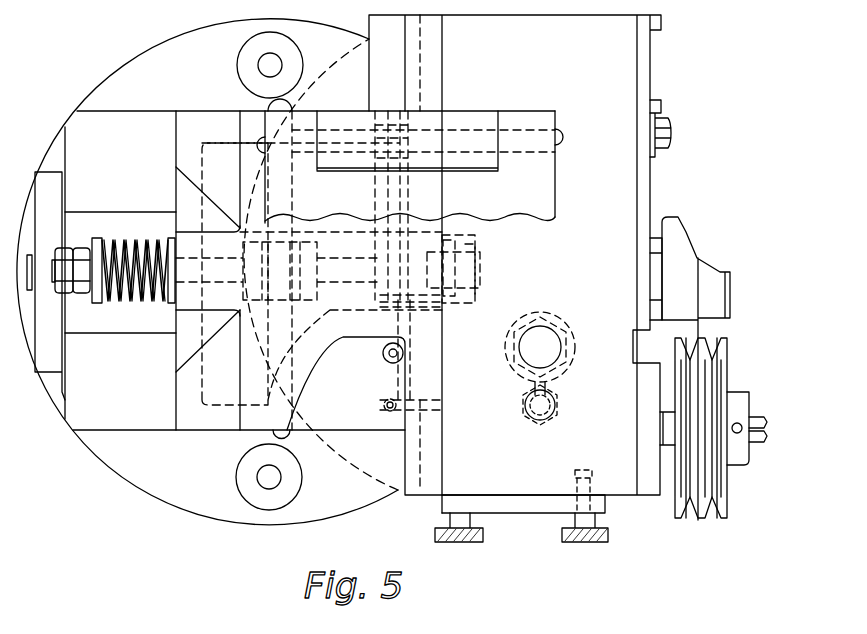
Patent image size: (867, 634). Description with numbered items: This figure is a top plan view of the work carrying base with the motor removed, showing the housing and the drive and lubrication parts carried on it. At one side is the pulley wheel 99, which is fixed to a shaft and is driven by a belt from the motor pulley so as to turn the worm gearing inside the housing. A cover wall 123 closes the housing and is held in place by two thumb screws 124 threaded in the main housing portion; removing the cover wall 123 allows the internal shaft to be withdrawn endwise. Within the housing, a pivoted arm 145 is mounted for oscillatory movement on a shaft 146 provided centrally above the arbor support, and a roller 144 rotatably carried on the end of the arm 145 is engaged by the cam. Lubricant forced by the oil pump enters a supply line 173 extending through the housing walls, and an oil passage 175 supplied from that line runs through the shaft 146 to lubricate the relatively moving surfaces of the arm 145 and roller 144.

The pulley wheel 99 is at (700, 520).
The cover wall 123 is at (517, 515).
The thumb screws 124 is at (578, 542).
The roller 144 is at (480, 262).
The pivoted arm 145 is at (423, 247).
The shaft 146 is at (375, 198).
The supply line 173 is at (503, 407).
The oil passage 175 is at (393, 323).